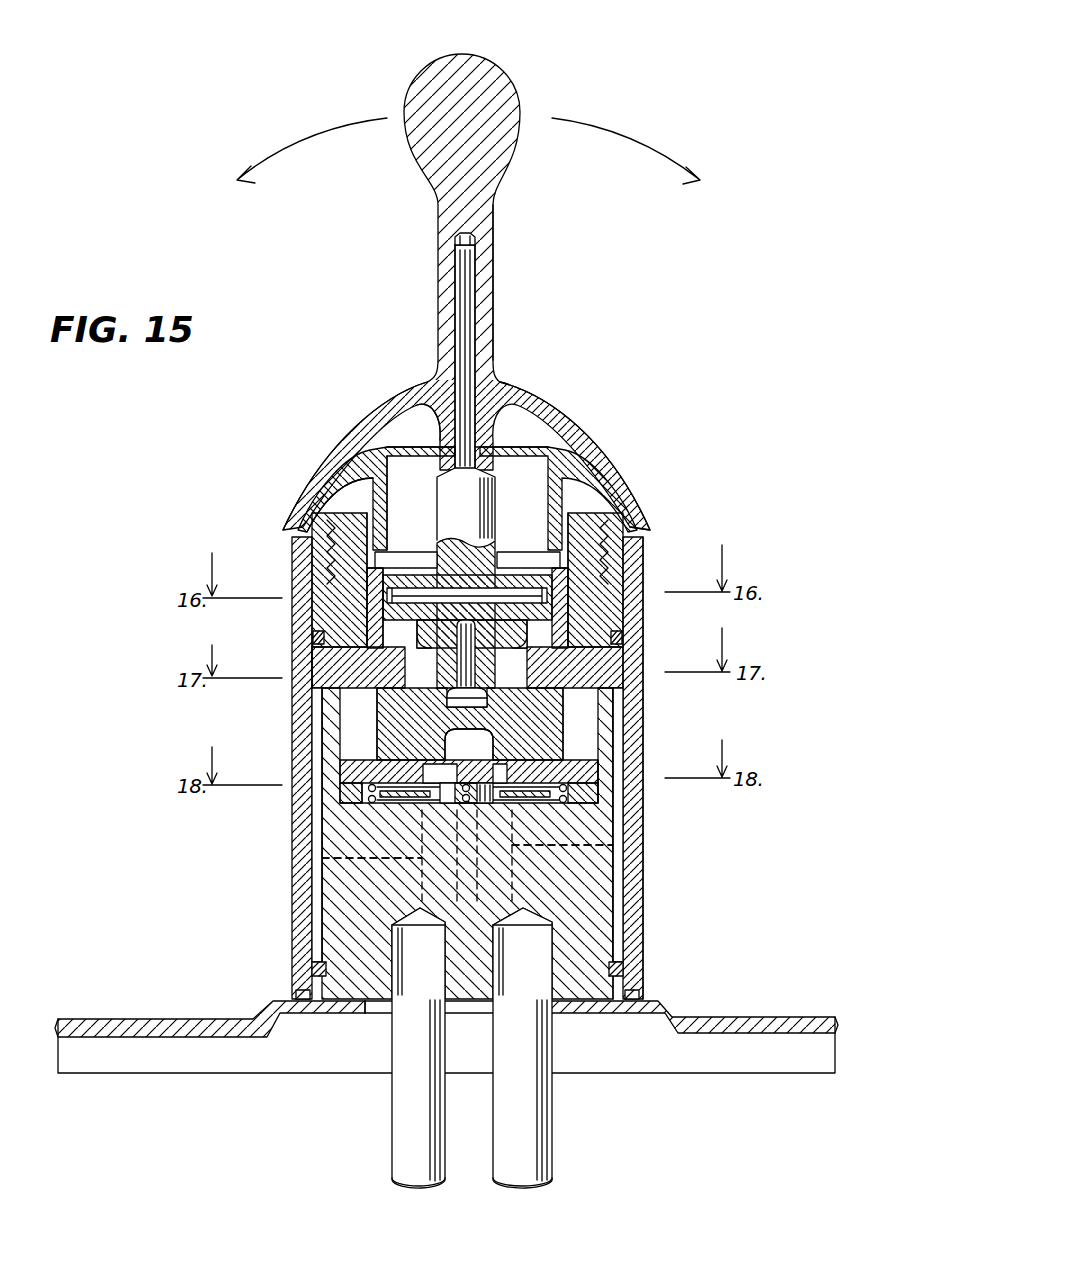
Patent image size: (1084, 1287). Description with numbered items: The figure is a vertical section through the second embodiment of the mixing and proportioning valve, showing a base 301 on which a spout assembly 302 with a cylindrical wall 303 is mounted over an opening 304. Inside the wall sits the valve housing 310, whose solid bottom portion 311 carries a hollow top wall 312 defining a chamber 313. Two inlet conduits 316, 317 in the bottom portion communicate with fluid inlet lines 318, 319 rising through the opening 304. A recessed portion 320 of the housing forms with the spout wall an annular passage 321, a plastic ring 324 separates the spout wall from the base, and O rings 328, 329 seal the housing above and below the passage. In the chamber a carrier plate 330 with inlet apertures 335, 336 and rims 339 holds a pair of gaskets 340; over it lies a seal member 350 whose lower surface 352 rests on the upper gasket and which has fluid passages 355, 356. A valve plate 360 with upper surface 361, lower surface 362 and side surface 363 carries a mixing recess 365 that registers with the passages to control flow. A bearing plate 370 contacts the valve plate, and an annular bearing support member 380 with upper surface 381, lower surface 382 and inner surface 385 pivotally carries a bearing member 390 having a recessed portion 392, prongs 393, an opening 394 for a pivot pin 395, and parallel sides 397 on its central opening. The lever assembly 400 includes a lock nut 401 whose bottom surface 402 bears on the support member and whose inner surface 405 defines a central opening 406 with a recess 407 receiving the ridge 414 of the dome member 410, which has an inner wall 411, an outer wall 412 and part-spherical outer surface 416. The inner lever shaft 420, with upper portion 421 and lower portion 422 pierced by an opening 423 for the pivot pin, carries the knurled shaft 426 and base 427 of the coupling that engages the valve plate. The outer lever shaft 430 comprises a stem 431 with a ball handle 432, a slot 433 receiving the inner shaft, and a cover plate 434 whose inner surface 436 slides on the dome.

The base 301 is at (800, 1022).
The spout assembly 302 is at (658, 971).
The cylindrical wall 303 is at (637, 823).
The opening 304 is at (362, 1014).
The valve housing 310 is at (352, 886).
The solid bottom portion 311 is at (600, 884).
The cylindrical wall 312 is at (617, 673).
The chamber 313 is at (585, 746).
The inlet conduit 316 is at (305, 855).
The inlet conduit 317 is at (618, 846).
The fluid inlet line 318 is at (412, 1130).
The fluid inlet line 319 is at (538, 1142).
The recessed portion 320 is at (628, 938).
The annular passage 321 is at (625, 912).
The plastic ring 324 is at (294, 997).
The O ring 328 is at (315, 968).
The O ring 329 is at (318, 637).
The carrier plate 330 is at (600, 796).
The inlet aperture 335 is at (430, 795).
The inlet aperture 336 is at (505, 798).
The rims 339 is at (450, 806).
The gasket 340 is at (377, 797).
The seal member 350 is at (373, 773).
The lower surface 352 is at (345, 785).
The fluid passage 355 is at (403, 724).
The fluid passage 356 is at (500, 745).
The valve plate 360 is at (378, 735).
The upper surface 361 is at (530, 686).
The lower surface 362 is at (600, 767).
The side surface 363 is at (583, 723).
The recess 365 is at (487, 738).
The bearing plate 370 is at (333, 662).
The bearing support member 380 is at (340, 573).
The upper surface 381 is at (634, 567).
The lower surface 382 is at (597, 637).
The inner surface 385 is at (382, 607).
The bearing member 390 is at (382, 618).
The recessed portion 392 is at (335, 648).
The prongs 393 is at (553, 604).
The opening 394 is at (550, 598).
The pivot pin 395 is at (508, 632).
The parallel sides 397 is at (435, 640).
The lever assembly 400 is at (533, 376).
The lock nut 401 is at (632, 505).
The bottom surface 402 is at (641, 582).
The inner surface 405 is at (528, 560).
The central opening 406 is at (333, 580).
The recess 407 is at (553, 534).
The dome member 410 is at (538, 438).
The inner wall 411 is at (377, 508).
The outer wall 412 is at (306, 486).
The ridge 414 is at (582, 526).
The outer surface 416 is at (317, 468).
The inner lever shaft 420 is at (436, 498).
The upper portion 421 is at (462, 343).
The lower portion 422 is at (450, 526).
The opening 423 is at (406, 560).
The knurled shaft 426 is at (458, 672).
The base 427 is at (447, 702).
The outer lever shaft 430 is at (430, 294).
The stem 431 is at (487, 298).
The ball handle 432 is at (513, 106).
The slot 433 is at (478, 241).
The cover plate 434 is at (343, 428).
The inner surface 436 is at (372, 428).